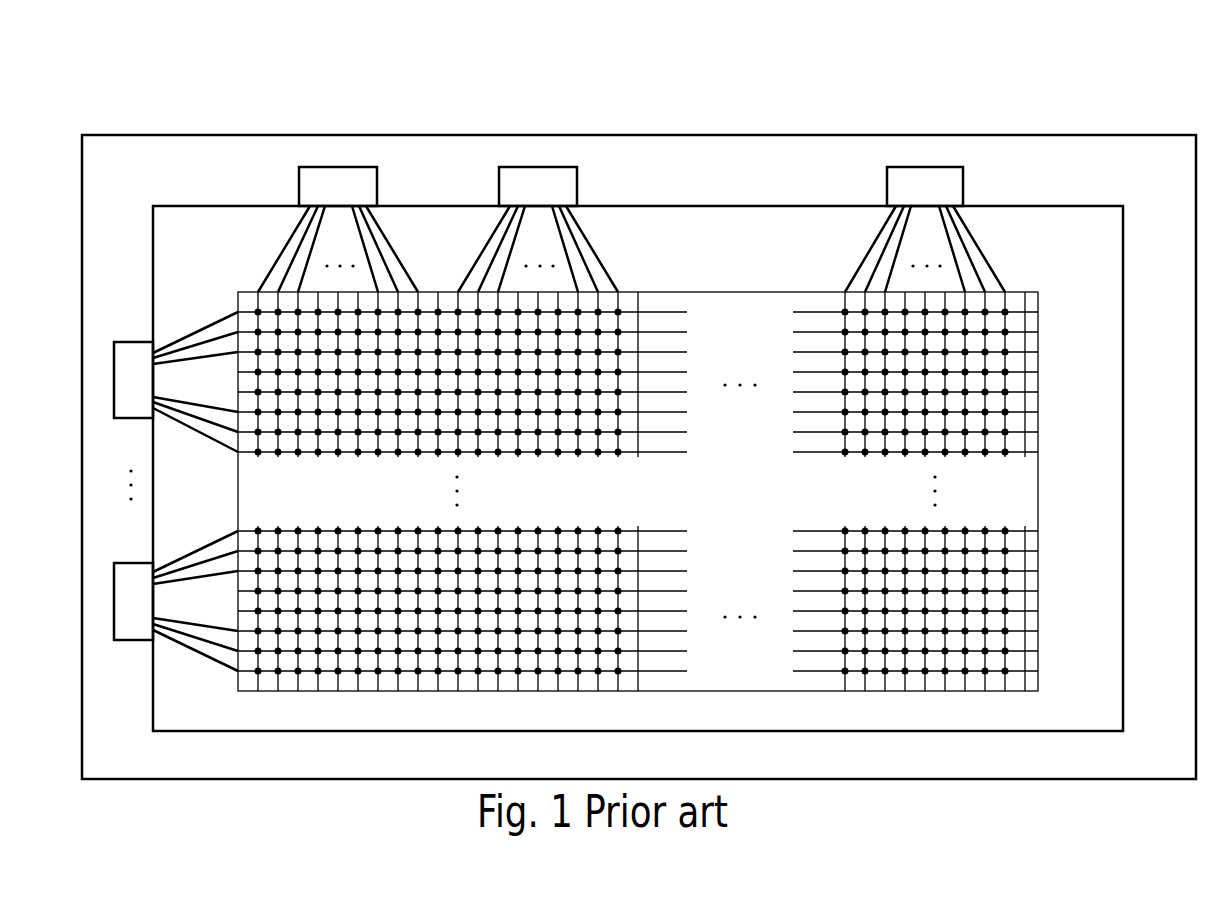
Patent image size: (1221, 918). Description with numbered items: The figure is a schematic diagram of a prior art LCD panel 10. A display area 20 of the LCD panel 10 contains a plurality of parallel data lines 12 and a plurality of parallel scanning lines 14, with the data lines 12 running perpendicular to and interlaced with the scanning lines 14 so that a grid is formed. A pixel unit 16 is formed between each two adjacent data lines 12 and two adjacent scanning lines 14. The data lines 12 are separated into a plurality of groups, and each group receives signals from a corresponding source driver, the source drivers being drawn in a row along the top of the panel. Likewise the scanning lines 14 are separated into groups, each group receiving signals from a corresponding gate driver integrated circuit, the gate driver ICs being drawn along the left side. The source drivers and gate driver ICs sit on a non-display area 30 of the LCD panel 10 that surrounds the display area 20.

The LCD panel 10 is at (1085, 99).
The data lines 12 is at (638, 341).
The scanning lines 14 is at (670, 412).
The pixel unit 16 is at (641, 300).
The display area 20 is at (1017, 291).
The non-display area 30 is at (1075, 187).